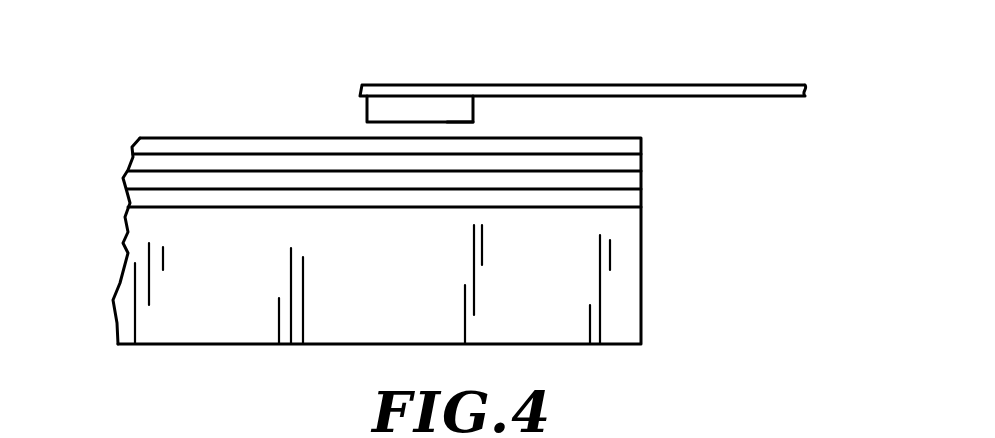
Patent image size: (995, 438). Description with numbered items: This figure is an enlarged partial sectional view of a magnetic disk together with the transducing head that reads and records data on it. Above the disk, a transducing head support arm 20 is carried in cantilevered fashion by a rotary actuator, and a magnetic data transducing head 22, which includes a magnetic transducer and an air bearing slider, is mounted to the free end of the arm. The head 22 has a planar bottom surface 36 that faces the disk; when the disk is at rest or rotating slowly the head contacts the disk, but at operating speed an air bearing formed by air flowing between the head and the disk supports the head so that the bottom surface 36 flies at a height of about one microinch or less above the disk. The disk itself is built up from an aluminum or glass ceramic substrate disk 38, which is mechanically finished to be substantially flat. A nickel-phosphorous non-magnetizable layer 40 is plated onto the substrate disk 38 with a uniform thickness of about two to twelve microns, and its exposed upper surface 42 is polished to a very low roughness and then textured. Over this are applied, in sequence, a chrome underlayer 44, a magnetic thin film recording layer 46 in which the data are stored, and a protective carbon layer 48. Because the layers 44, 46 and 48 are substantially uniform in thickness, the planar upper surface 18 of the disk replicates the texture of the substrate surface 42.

The upper surface 18 is at (213, 137).
The transducing head support arm 20 is at (755, 85).
The magnetic data transducing head 22 is at (366, 108).
The planar bottom surface 36 is at (447, 122).
The substrate disk 38 is at (615, 307).
The non-magnetizable layer 40 is at (552, 205).
The upper surface of the Ni-P alloy layer 42 is at (628, 190).
The chrome underlayer 44 is at (142, 177).
The magnetic thin film recording layer 46 is at (628, 163).
The protective carbon layer 48 is at (167, 146).